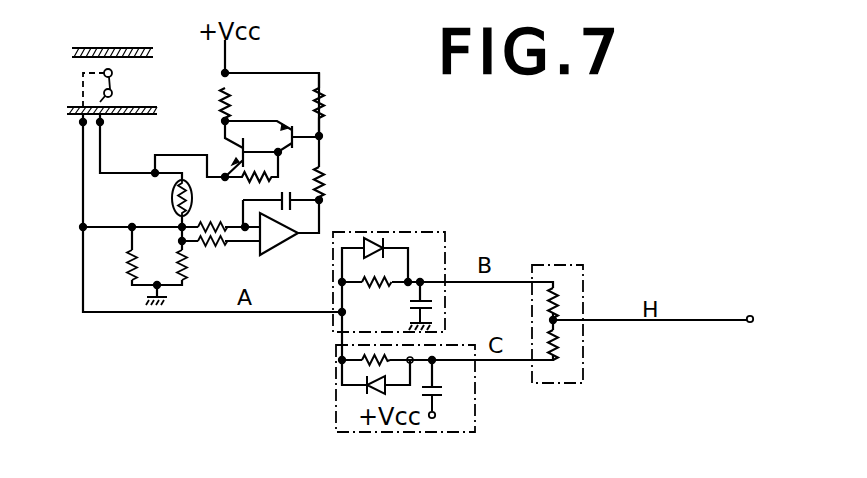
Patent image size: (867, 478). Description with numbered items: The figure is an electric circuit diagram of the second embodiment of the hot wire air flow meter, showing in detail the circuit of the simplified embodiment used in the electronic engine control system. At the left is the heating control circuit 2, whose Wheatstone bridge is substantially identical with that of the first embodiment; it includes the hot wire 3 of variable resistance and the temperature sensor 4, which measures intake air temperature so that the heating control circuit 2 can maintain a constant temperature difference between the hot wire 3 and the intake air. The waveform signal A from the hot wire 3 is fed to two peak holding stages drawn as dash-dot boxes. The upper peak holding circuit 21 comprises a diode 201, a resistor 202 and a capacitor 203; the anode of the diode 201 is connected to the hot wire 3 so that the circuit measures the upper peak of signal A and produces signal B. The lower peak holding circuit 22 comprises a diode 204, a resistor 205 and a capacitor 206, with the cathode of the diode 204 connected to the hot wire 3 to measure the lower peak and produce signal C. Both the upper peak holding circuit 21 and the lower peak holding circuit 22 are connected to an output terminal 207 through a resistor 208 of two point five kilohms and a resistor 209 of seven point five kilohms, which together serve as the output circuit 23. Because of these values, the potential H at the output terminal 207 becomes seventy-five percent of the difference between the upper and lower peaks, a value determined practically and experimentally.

The heating control circuit 2 is at (293, 73).
The hot wire 3 is at (112, 76).
The temperature sensor 4 is at (192, 197).
The upper peak holding circuit 21 is at (354, 232).
The lower peak holding circuit 22 is at (363, 432).
The output circuit 23 is at (566, 272).
The diode 201 is at (385, 233).
The resistor 202 is at (356, 282).
The capacitor 203 is at (425, 298).
The diode 204 is at (377, 392).
The resistor 205 is at (367, 360).
The capacitor 206 is at (443, 391).
The output terminal 207 is at (556, 320).
The resistor 208 is at (550, 303).
The resistor 209 is at (558, 350).